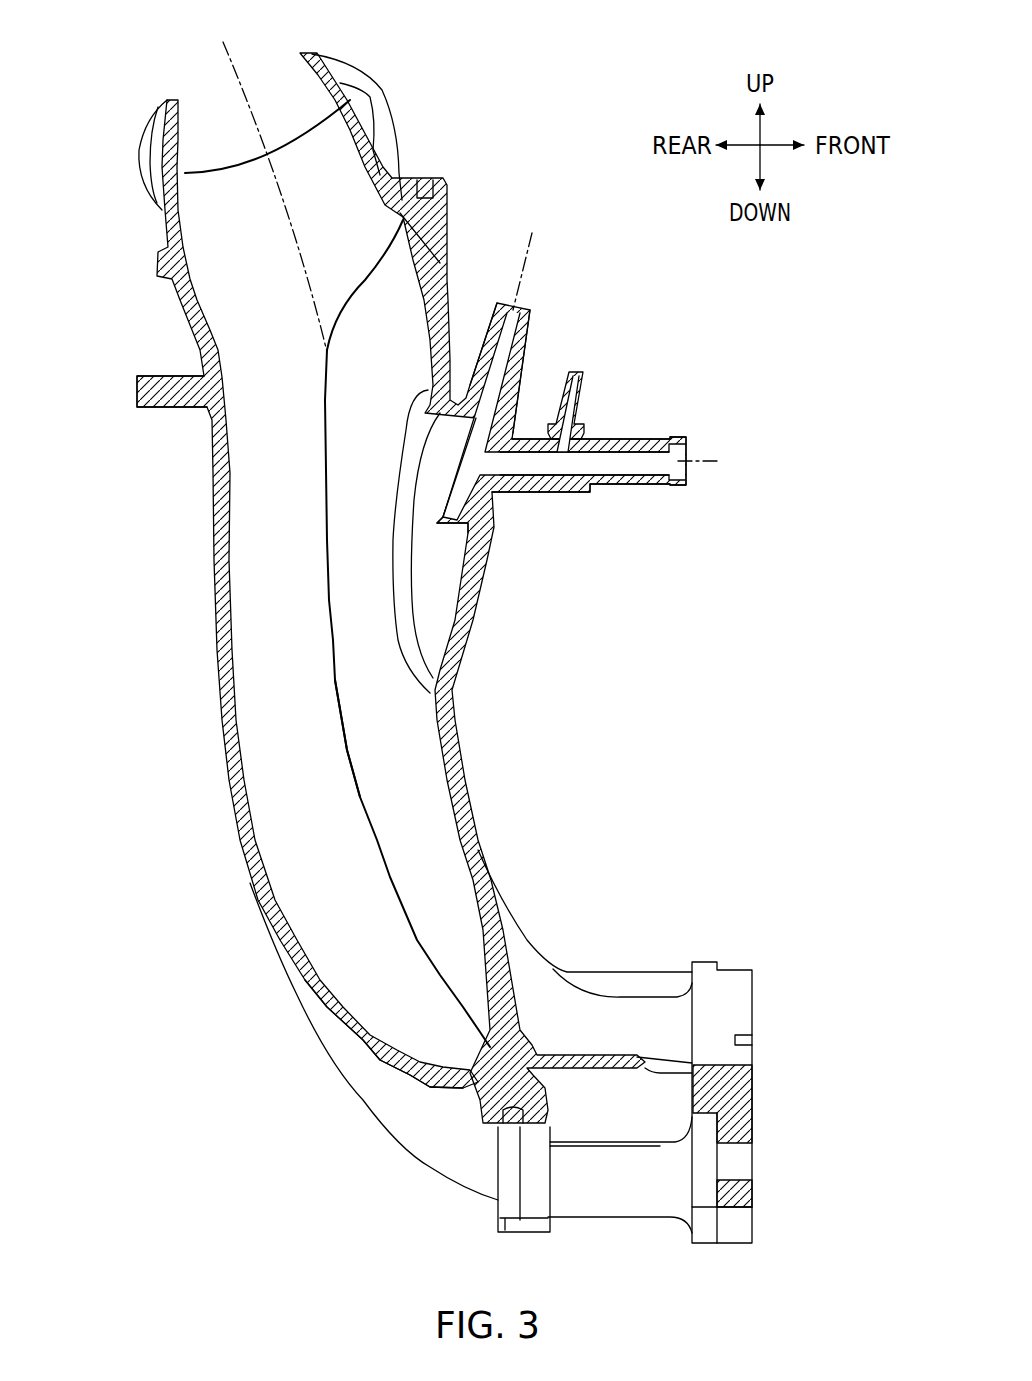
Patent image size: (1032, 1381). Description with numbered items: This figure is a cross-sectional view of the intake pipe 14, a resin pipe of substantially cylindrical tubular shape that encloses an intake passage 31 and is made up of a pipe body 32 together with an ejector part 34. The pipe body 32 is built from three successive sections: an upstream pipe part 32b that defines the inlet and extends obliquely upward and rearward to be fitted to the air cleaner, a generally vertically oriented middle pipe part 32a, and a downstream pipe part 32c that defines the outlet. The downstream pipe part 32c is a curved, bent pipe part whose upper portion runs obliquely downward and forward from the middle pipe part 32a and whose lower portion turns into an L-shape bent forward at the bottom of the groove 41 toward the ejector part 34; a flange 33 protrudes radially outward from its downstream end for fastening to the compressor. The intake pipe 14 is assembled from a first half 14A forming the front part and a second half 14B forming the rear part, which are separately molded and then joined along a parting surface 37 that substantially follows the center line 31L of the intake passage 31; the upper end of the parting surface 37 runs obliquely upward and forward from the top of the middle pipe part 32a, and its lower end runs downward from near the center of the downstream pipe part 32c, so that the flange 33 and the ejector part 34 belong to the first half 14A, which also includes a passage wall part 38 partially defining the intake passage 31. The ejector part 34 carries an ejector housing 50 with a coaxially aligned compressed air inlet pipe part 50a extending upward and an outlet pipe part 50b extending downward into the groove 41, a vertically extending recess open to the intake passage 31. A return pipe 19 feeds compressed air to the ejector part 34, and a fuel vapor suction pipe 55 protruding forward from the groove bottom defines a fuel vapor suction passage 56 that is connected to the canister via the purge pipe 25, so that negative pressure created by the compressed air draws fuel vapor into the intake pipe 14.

The intake pipe 14 is at (463, 126).
The first half 14A is at (456, 702).
The second half 14B is at (210, 735).
The return pipe 19 is at (530, 248).
The purge pipe 25 is at (715, 461).
The intake passage 31 is at (308, 623).
The center line 31L is at (261, 178).
The pipe body 32 is at (203, 567).
The middle pipe part 32a is at (217, 462).
The upstream pipe part 32b is at (172, 203).
The downstream pipe part 32c is at (362, 1043).
The flange 33 is at (733, 977).
The ejector part 34 is at (552, 362).
The parting surface 37 is at (347, 750).
The passage wall part 38 is at (480, 887).
The groove 41 is at (438, 559).
The ejector housing 50 is at (455, 440).
The compressed air inlet pipe part 50a is at (490, 337).
The outlet pipe part 50b is at (450, 482).
The fuel vapor suction pipe 55 is at (633, 440).
The fuel vapor suction passage 56 is at (641, 468).